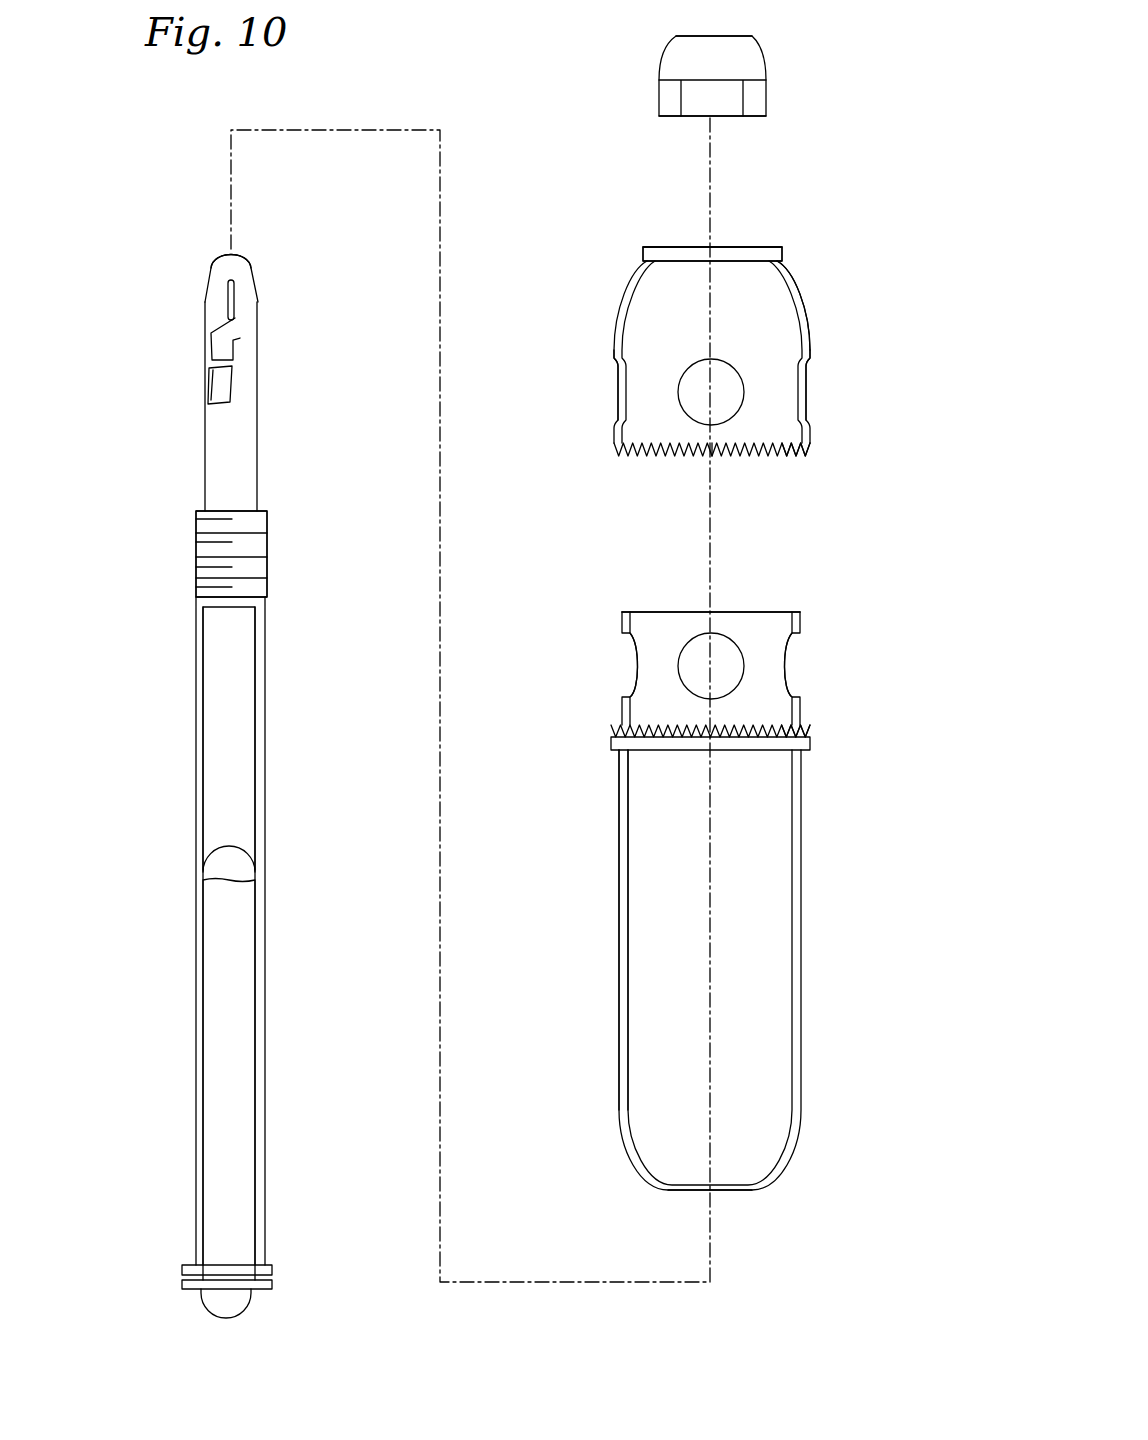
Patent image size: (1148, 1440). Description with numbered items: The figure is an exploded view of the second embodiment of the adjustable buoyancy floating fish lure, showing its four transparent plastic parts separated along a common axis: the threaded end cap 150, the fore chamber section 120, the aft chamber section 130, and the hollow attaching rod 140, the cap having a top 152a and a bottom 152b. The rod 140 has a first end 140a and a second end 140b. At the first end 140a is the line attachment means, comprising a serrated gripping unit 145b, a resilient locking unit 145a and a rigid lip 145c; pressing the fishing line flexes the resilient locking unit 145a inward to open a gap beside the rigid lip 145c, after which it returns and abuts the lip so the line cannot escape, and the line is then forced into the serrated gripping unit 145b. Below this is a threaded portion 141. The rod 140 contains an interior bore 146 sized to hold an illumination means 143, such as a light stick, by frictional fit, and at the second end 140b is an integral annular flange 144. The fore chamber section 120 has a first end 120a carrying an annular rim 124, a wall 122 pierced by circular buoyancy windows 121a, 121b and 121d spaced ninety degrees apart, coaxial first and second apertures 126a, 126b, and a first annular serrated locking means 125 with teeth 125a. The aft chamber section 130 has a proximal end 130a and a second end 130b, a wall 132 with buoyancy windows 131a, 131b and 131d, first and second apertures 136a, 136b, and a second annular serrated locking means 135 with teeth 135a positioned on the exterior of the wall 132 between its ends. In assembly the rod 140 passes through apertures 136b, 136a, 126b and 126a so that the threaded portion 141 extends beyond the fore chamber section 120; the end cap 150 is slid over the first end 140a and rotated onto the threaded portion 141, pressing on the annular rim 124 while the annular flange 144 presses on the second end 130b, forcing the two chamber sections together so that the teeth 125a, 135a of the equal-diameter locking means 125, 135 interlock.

The threaded end cap 150 is at (745, 60).
The cap top 152a is at (680, 36).
The cap bottom 152b is at (666, 118).
The fore chamber section 120 is at (628, 272).
The first end of the fore chamber section 120a is at (666, 247).
The annular rim 124 is at (783, 255).
The first aperture of the fore chamber section 126a is at (746, 247).
The fore chamber section wall 122 is at (812, 300).
The buoyancy window 121d is at (618, 375).
The buoyancy window 121b is at (815, 387).
The buoyancy window 121a is at (683, 400).
The first annular serrated locking means 125 is at (645, 468).
The teeth 125a is at (800, 460).
The second aperture of the fore chamber section 126b is at (727, 452).
The aft chamber section 130 is at (832, 912).
The proximal end of the aft chamber section 130a is at (628, 612).
The first aperture of the aft chamber section 136a is at (740, 638).
The buoyancy window 131a is at (742, 655).
The buoyancy window 131d is at (636, 677).
The buoyancy window 131b is at (789, 675).
The second annular serrated locking means 135 is at (598, 742).
The teeth 135a is at (797, 735).
The aft chamber section wall 132 is at (622, 962).
The second aperture of the aft chamber section 136b is at (688, 1193).
The second end of the aft chamber section 130b is at (740, 1193).
The hollow attaching rod 140 is at (292, 665).
The first end of the hollow attaching rod 140a is at (240, 253).
The serrated gripping unit 145b is at (236, 293).
The rigid lip 145c is at (214, 343).
The resilient locking unit 145a is at (214, 372).
The threaded portion 141 is at (210, 546).
The interior bore 146 is at (222, 708).
The illumination means 143 is at (222, 1012).
The annular flange 144 is at (266, 1268).
The second end of the hollow attaching rod 140b is at (190, 1288).